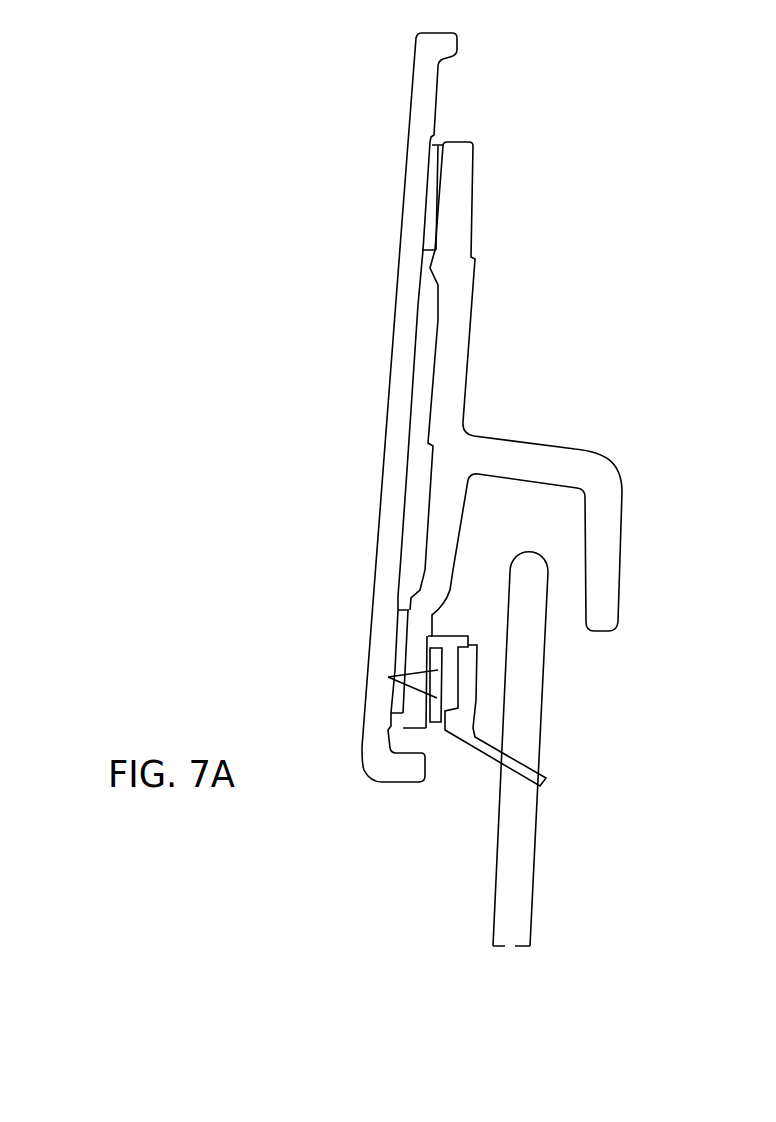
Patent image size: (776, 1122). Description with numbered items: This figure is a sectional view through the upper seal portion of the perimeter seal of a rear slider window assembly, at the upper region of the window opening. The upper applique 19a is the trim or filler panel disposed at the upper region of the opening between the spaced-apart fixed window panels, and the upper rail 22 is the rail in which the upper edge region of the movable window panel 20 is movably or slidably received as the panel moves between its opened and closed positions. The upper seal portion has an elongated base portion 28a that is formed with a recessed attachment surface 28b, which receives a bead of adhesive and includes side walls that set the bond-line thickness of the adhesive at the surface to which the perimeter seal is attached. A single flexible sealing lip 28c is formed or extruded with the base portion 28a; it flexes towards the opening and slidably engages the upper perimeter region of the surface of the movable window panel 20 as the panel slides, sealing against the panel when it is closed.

The upper applique 19a is at (385, 423).
The upper rail 22 is at (578, 447).
The movable window panel 20 is at (543, 688).
The base portion 28a is at (435, 723).
The recessed attachment surface 28b is at (435, 662).
The sealing lip 28c is at (478, 753).